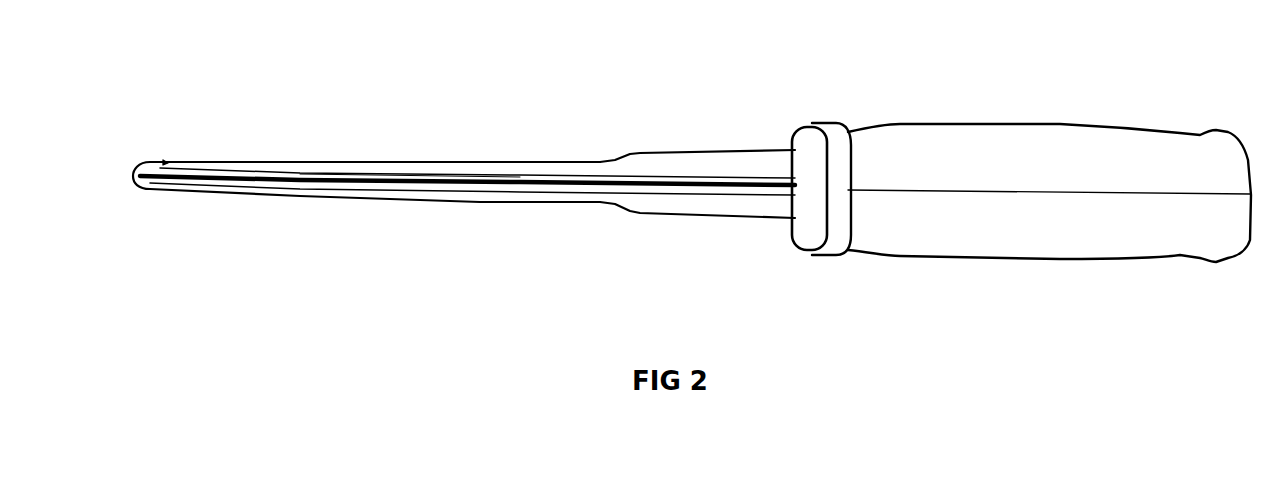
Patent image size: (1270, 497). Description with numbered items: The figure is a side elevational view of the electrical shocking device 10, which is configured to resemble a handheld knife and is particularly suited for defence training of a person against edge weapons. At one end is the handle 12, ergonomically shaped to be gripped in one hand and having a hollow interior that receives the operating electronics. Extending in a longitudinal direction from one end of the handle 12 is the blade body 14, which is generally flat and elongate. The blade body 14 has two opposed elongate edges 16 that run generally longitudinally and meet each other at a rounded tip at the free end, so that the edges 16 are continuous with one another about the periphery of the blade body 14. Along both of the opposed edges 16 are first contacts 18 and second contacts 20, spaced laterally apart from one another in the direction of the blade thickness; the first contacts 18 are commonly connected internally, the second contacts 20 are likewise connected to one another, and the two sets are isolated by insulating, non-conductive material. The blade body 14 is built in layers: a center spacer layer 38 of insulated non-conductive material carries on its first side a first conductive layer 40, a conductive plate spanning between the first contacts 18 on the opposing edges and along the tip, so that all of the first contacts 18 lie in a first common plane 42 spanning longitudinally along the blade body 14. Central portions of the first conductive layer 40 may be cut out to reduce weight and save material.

The electrical shocking device 10 is at (470, 107).
The handle 12 is at (1045, 165).
The blade body 14 is at (663, 137).
The opposed elongate edges 16 is at (132, 176).
The first contacts 18 is at (418, 177).
The second contacts 20 is at (445, 187).
The center spacer layer 38 is at (500, 176).
The first conductive layer 40 is at (224, 168).
The first common plane 42 is at (281, 192).